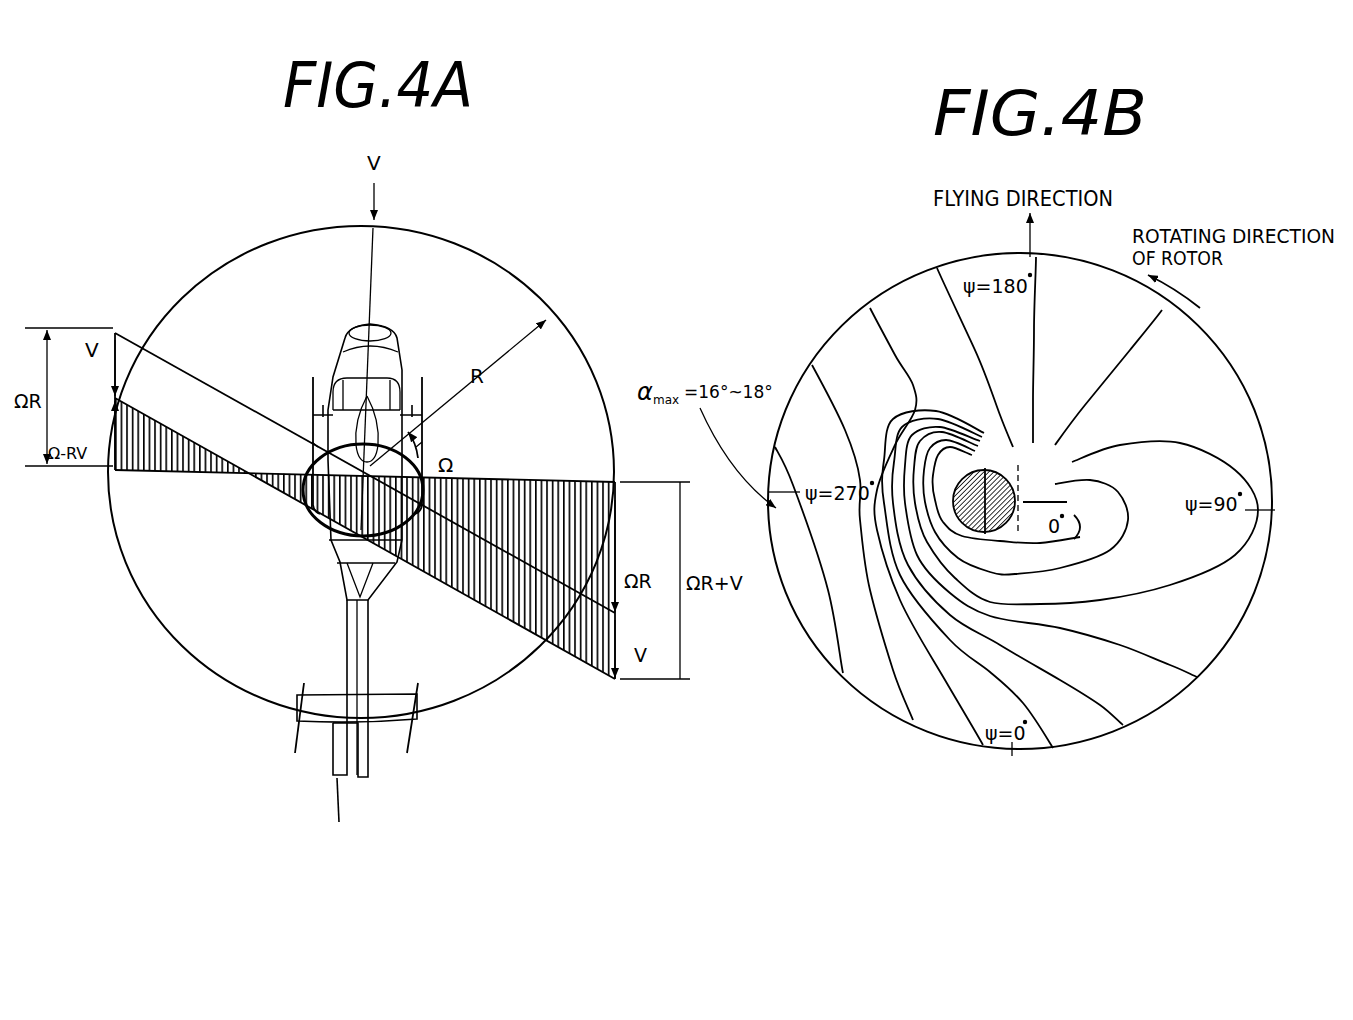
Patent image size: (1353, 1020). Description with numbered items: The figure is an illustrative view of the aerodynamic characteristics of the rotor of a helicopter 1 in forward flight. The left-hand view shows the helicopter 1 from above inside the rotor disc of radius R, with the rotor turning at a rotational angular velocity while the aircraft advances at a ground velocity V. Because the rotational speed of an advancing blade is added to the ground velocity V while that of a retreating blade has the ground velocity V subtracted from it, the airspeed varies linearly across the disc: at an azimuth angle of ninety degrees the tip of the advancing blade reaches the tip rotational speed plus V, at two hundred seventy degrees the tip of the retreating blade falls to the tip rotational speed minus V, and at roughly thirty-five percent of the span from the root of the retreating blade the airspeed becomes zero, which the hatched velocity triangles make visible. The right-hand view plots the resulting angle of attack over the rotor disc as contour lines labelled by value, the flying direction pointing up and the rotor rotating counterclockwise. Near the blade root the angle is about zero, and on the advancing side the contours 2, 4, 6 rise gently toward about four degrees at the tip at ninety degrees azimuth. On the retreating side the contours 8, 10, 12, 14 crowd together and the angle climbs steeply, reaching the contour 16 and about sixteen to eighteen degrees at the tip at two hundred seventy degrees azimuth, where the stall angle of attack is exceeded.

In FIG. 4A, the helicopter 1 is at (402, 310).
In FIG. 4B, the 2 degree blade angle-of-attack contour 2 is at (1025, 507).
In FIG. 4B, the 4 degree blade angle-of-attack contour 4 is at (1085, 507).
In FIG. 4B, the 6 degree blade angle-of-attack contour 6 is at (1050, 493).
In FIG. 4B, the 8 degree blade angle-of-attack contour 8 is at (1007, 491).
In FIG. 4B, the 10 degree blade angle-of-attack contour 10 is at (967, 508).
In FIG. 4B, the 12 degree blade angle-of-attack contour 12 is at (924, 526).
In FIG. 4B, the 14 degree blade angle-of-attack contour 14 is at (858, 542).
In FIG. 4B, the 16 degree blade angle-of-attack contour 16 is at (809, 560).